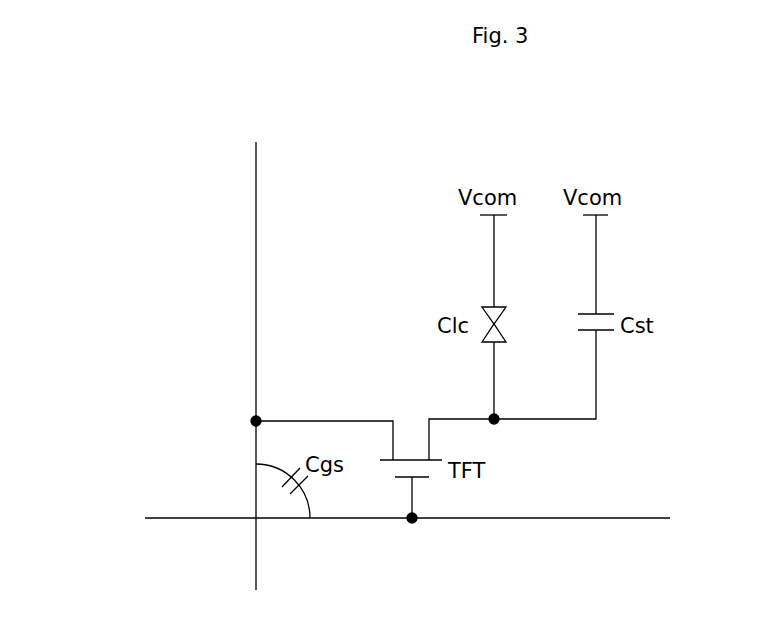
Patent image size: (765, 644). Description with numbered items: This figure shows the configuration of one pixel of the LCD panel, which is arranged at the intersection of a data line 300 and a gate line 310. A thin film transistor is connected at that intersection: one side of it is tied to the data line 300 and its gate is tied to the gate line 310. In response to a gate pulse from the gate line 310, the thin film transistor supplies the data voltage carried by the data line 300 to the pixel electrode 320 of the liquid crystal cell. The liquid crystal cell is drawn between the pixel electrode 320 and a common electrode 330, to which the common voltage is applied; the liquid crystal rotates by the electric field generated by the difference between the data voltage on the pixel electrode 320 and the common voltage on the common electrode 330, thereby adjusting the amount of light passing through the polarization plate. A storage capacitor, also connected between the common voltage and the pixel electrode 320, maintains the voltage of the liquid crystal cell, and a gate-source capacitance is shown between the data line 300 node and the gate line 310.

The data line 300 is at (255, 190).
The gate line 310 is at (208, 519).
The pixel electrode 320 is at (498, 345).
The common electrode 330 is at (498, 306).